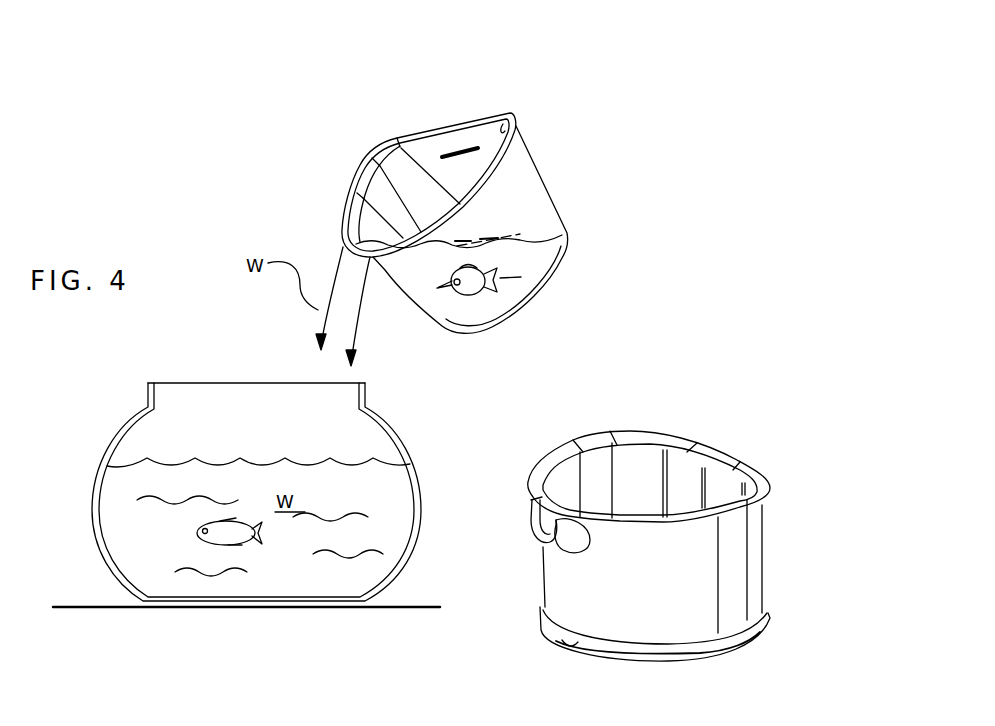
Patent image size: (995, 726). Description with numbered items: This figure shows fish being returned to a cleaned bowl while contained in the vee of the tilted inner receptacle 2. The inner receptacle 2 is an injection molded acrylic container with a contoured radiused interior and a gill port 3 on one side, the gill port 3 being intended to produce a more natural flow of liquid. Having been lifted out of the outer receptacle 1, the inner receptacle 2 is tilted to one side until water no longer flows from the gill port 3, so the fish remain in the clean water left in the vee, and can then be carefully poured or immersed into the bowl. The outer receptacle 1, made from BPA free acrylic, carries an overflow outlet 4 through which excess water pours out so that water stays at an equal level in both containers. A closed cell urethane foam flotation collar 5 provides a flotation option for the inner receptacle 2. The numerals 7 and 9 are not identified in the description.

The outer receptacle 1 is at (612, 534).
The inner receptacle 2 is at (512, 113).
The gill port 3 is at (537, 255).
The overflow outlet 4 is at (456, 163).
The flotation collar 5 is at (530, 527).
The notch 7 is at (570, 645).
The ribs 9 is at (702, 470).